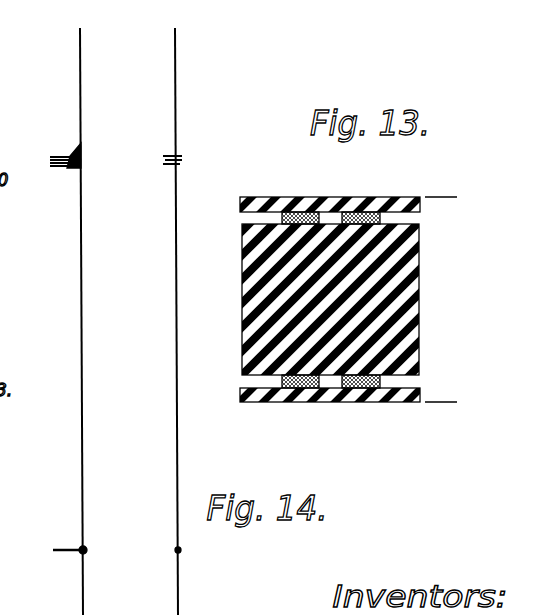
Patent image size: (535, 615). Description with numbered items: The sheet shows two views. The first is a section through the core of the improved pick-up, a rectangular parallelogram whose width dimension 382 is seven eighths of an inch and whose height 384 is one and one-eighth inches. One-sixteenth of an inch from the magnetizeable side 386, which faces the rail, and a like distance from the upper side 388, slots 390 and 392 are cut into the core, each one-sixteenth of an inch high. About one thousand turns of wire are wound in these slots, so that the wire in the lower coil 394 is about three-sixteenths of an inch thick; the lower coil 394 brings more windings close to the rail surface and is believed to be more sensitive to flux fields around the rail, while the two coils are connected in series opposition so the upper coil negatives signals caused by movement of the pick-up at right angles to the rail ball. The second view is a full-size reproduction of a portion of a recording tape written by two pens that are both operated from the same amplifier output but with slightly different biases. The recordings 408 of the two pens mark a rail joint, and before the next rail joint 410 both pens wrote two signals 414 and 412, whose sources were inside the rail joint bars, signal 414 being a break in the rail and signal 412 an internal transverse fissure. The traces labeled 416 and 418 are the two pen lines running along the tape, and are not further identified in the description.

In FIG. 13, the width dimension 382 is at (242, 405).
In FIG. 13, the height 384 is at (447, 197).
In FIG. 13, the magnetizeable side 386 is at (292, 402).
In FIG. 13, the upper side 388 is at (257, 197).
In FIG. 13, the slot 390 is at (250, 381).
In FIG. 13, the slot 392 is at (249, 214).
In FIG. 13, the lower coil 394 is at (382, 385).
In FIG. 14, the recordings of a rail joint 408 is at (177, 551).
In FIG. 14, the rail joint 410 is at (68, 158).
In FIG. 14, the signal 412 is at (55, 162).
In FIG. 14, the signal 414 is at (60, 168).
In FIG. 14, the left conductor line 416 is at (83, 483).
In FIG. 14, the right conductor line 418 is at (178, 488).